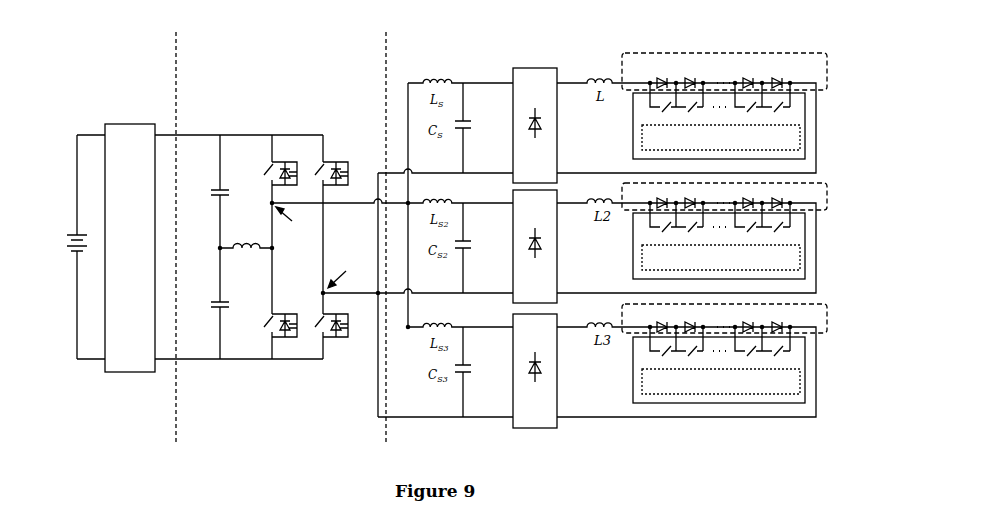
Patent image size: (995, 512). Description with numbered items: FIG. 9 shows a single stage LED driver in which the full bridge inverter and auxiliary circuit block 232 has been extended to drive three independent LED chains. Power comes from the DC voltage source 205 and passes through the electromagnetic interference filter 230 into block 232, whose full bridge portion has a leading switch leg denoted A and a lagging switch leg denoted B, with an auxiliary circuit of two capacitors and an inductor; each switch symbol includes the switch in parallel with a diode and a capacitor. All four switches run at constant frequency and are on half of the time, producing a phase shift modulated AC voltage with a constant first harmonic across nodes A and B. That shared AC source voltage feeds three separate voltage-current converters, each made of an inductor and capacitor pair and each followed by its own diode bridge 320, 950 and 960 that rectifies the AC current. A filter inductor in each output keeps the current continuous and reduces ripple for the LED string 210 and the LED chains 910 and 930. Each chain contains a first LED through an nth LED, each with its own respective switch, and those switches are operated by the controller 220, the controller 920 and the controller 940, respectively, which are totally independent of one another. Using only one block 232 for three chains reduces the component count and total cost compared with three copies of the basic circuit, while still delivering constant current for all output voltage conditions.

The DC voltage source 205 is at (66, 265).
The electromagnetic interference (EMI) filter 230 is at (117, 309).
The full bridge inverter and auxiliary circuit block 232 is at (268, 101).
The diode bridge 320 is at (522, 170).
The diode bridge 950 is at (522, 290).
The diode bridge 960 is at (522, 413).
The LED string 210 is at (827, 73).
The LED chain 910 is at (827, 190).
The LED chain 930 is at (827, 310).
The controller 220 is at (792, 147).
The controller 920 is at (788, 267).
The controller 940 is at (788, 391).